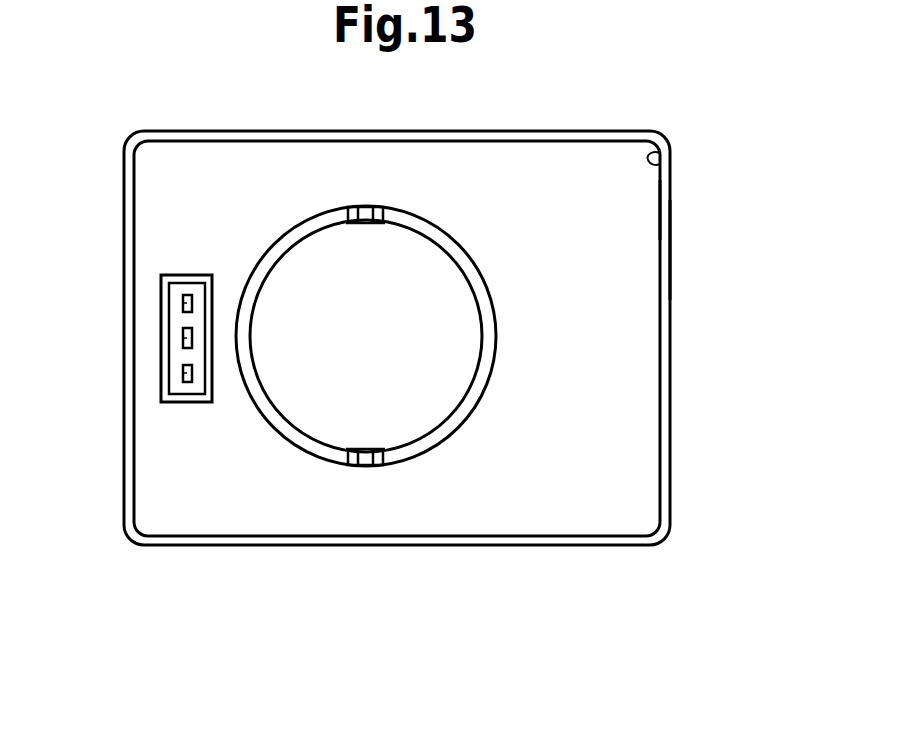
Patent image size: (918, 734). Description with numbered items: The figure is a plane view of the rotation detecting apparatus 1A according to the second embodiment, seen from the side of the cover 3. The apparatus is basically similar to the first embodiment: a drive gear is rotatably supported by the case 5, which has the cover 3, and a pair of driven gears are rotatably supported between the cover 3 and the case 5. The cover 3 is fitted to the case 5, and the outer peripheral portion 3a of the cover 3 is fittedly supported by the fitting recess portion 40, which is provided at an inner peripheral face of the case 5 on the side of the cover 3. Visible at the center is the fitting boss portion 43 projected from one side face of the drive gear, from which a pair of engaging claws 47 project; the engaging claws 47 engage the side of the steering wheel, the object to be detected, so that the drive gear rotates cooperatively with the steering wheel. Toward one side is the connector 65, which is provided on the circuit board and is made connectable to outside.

The rotation detecting apparatus 1A is at (690, 120).
The cover 3 is at (597, 162).
The outer peripheral portion 3a is at (661, 210).
The case 5 is at (678, 252).
The fitting recess portion 40 is at (664, 158).
The fitting boss portion 43 is at (278, 258).
The engaging claw 47 is at (340, 207).
The connector 65 is at (161, 318).